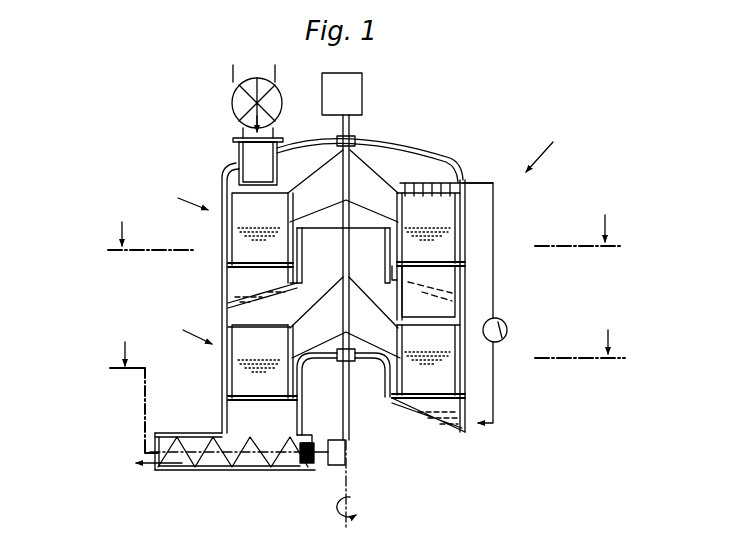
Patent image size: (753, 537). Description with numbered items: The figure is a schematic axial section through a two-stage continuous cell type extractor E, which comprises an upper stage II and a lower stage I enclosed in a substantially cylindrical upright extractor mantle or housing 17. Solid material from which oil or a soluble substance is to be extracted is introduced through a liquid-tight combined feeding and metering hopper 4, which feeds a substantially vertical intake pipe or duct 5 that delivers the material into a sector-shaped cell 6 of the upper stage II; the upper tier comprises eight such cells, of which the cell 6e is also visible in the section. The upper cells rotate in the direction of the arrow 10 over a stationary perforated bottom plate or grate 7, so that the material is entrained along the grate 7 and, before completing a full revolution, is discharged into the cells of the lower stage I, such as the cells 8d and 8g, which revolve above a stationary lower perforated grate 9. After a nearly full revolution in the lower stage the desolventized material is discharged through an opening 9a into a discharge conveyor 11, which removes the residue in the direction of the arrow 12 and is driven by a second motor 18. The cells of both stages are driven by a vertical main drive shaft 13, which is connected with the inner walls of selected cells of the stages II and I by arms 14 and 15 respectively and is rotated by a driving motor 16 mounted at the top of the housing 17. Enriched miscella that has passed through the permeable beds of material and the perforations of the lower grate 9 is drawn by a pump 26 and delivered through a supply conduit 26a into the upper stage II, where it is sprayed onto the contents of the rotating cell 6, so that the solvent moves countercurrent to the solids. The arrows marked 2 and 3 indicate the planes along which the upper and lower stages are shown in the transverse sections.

The section indicator 2 is at (362, 232).
The section indicator 3 is at (361, 391).
The hopper 4 is at (236, 104).
The intake pipe or duct 5 is at (238, 162).
The sector-shaped cell 6 is at (240, 251).
The cell 6e is at (446, 245).
The stationary bottom plate or grate 7 is at (460, 266).
The cell 8g is at (242, 374).
The cell 8d is at (445, 378).
The stationary lower perforated grate 9 is at (465, 400).
The opening 9a is at (270, 400).
The arrow 10 is at (358, 514).
The discharge conveyor 11 is at (227, 470).
The arrow 12 is at (135, 463).
The vertical main drive shaft 13 is at (350, 405).
The arms 14 is at (375, 182).
The arms 15 is at (356, 303).
The driving motor 16 is at (362, 92).
The extractor mantle or housing 17 is at (418, 150).
The second motor 18 is at (345, 452).
The pump 26 is at (508, 332).
The supply conduit 26a is at (496, 306).
The lower stage I is at (187, 331).
The upper stage II is at (182, 205).
The two-stage extractor E is at (548, 146).